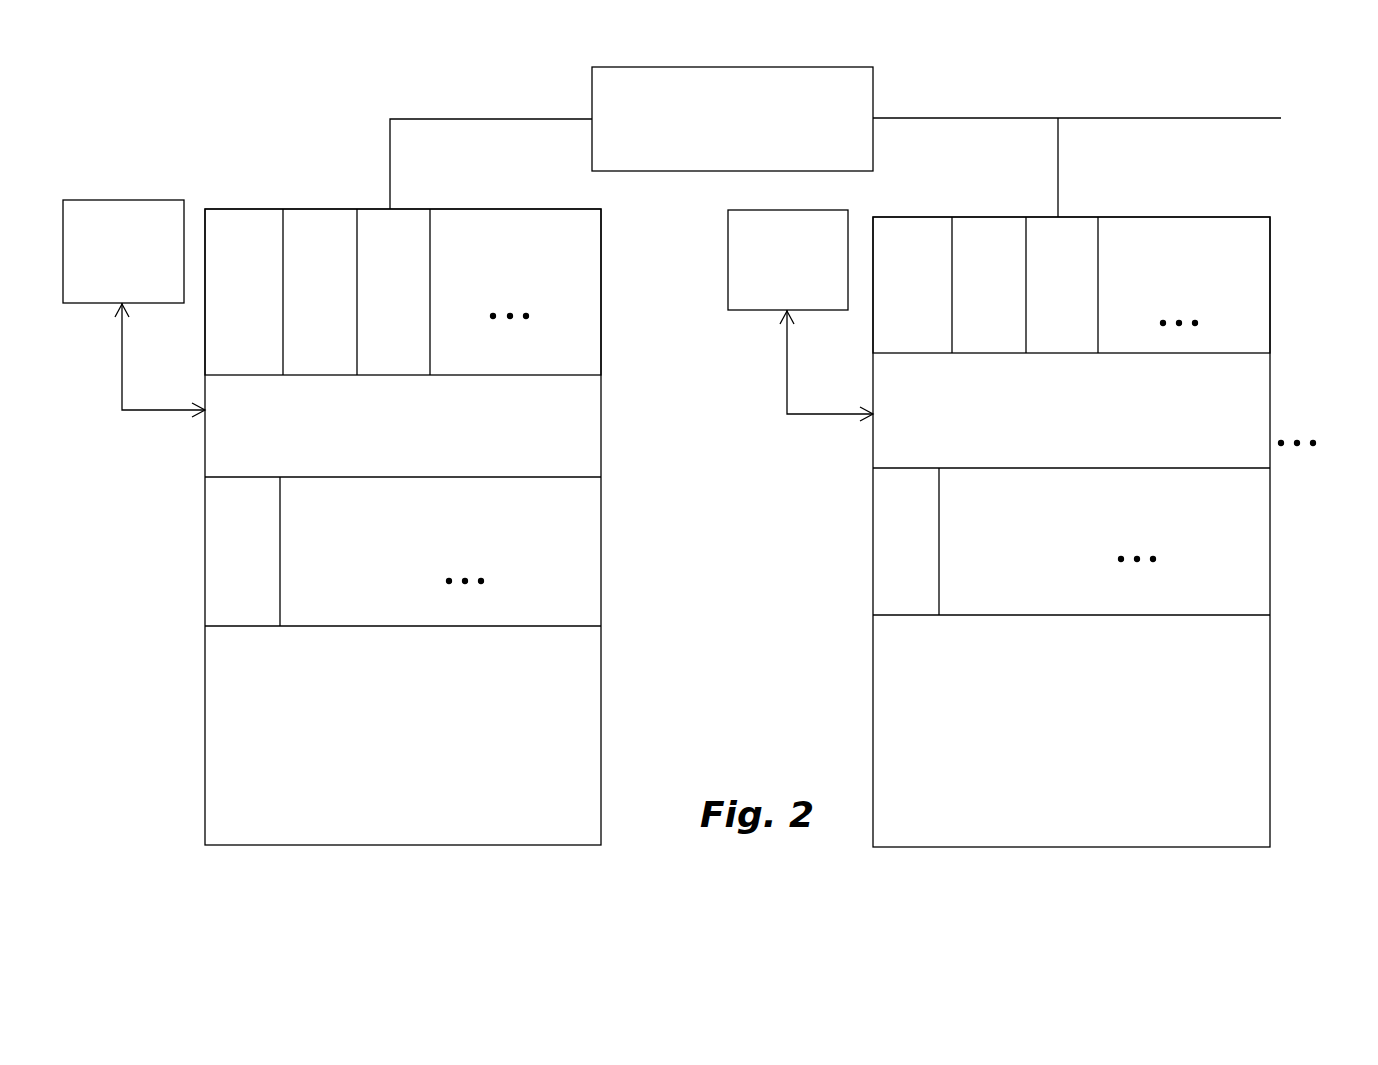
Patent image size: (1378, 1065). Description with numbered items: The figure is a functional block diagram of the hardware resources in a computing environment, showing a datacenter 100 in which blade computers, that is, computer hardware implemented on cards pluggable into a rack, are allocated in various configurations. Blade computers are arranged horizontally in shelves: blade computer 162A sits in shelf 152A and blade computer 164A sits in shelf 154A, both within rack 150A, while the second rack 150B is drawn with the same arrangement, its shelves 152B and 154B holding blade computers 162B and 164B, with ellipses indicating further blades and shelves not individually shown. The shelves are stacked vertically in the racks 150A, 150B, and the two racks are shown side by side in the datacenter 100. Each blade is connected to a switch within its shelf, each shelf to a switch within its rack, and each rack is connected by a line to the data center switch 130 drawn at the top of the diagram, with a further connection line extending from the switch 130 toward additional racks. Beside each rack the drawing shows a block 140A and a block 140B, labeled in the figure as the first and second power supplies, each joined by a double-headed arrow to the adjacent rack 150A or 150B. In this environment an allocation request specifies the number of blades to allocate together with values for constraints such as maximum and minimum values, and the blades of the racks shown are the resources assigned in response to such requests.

The datacenter 100 is at (1145, 82).
The switch 130 is at (724, 142).
The power supply 1 140A is at (134, 308).
The power supply 2 140B is at (800, 315).
The rack 150A is at (414, 503).
The rack 150B is at (1077, 511).
The shelf 152A is at (601, 354).
The shelf 152B is at (1270, 378).
The shelf 154A is at (601, 589).
The shelf 154B is at (1270, 633).
The blade computer 162A is at (422, 209).
The server 162B is at (1079, 223).
The blade computer 164A is at (205, 512).
The server 164B is at (873, 498).